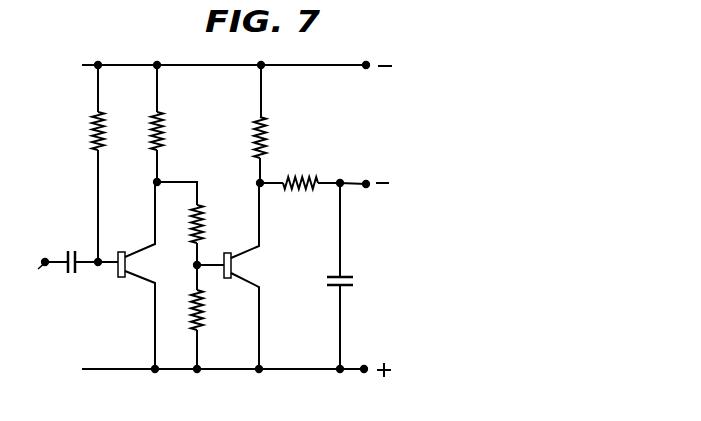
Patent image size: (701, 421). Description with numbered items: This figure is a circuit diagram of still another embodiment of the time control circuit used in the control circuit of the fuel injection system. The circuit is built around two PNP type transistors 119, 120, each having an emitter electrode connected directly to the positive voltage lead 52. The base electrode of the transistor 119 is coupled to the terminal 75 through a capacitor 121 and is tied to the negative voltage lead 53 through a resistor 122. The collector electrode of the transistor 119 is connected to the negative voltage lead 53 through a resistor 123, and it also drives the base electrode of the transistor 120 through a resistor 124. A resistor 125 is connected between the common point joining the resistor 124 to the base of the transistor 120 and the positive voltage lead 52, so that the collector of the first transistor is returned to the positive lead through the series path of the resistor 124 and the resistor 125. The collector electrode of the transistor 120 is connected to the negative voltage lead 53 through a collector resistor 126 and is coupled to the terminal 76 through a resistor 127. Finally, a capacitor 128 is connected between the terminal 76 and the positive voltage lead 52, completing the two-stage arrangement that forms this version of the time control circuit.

The positive voltage lead 52 is at (295, 368).
The negative voltage lead 53 is at (333, 67).
The terminal 75 is at (33, 282).
The terminal 76 is at (366, 187).
The transistor 119 is at (123, 247).
The transistor 120 is at (229, 278).
The capacitor 121 is at (70, 250).
The resistor 122 is at (78, 163).
The resistor 123 is at (163, 129).
The resistor 124 is at (203, 230).
The resistor 125 is at (203, 316).
The collector resistor 126 is at (266, 131).
The resistor 127 is at (312, 178).
The capacitor 128 is at (345, 277).